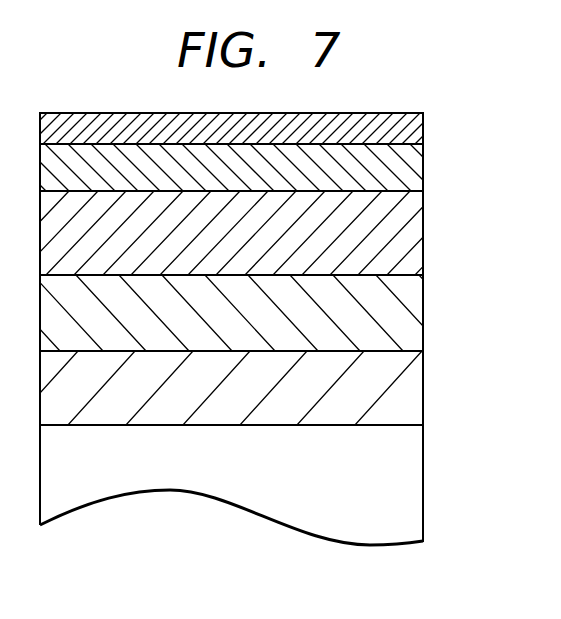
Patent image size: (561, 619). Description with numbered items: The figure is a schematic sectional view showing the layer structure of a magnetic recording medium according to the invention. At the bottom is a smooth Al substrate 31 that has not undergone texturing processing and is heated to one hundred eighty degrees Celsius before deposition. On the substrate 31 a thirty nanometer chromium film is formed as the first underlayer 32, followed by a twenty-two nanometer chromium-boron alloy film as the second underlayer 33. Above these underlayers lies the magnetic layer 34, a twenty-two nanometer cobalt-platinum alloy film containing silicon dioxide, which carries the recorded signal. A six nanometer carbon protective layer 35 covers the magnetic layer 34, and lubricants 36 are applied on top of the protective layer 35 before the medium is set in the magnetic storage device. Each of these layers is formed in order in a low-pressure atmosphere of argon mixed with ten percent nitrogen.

The Al substrate 31 is at (408, 473).
The first underlayer 32 is at (408, 391).
The second underlayer 33 is at (408, 299).
The magnetic layer 34 is at (408, 236).
The protective layer 35 is at (412, 170).
The lubricants 36 is at (412, 133).